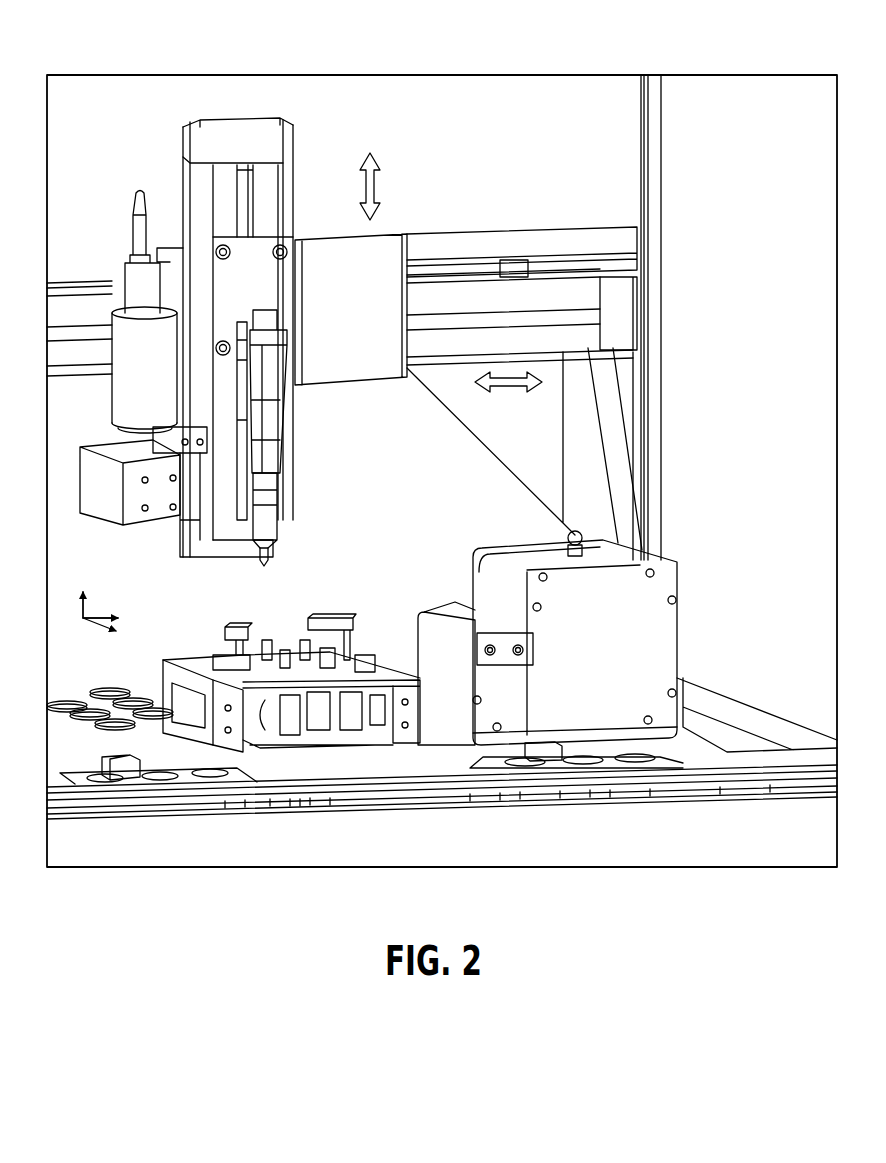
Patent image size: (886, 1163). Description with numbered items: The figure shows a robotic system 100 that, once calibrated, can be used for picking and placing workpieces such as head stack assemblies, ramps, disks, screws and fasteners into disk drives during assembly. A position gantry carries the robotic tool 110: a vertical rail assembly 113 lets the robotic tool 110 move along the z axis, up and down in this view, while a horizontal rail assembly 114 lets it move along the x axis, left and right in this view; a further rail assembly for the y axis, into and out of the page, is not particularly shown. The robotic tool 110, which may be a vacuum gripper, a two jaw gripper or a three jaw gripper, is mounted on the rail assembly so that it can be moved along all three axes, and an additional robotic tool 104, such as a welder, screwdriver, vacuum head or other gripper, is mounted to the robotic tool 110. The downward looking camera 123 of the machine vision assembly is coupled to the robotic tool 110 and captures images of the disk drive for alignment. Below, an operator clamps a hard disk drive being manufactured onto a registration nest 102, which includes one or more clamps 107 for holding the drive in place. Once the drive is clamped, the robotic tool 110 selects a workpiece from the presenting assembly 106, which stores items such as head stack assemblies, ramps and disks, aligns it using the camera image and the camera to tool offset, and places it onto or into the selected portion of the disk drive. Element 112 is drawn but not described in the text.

The robotic system 100 is at (116, 42).
The registration nest 102 is at (307, 584).
The additional robotic tool 104 is at (277, 423).
The presenting assembly 106 is at (433, 612).
The clamps 107 is at (240, 625).
The robotic tool 110 is at (267, 517).
The nozzle tip 112 is at (263, 565).
The rail assembly 113 is at (247, 193).
The rail assembly 114 is at (465, 320).
The downward looking camera 123 is at (126, 285).